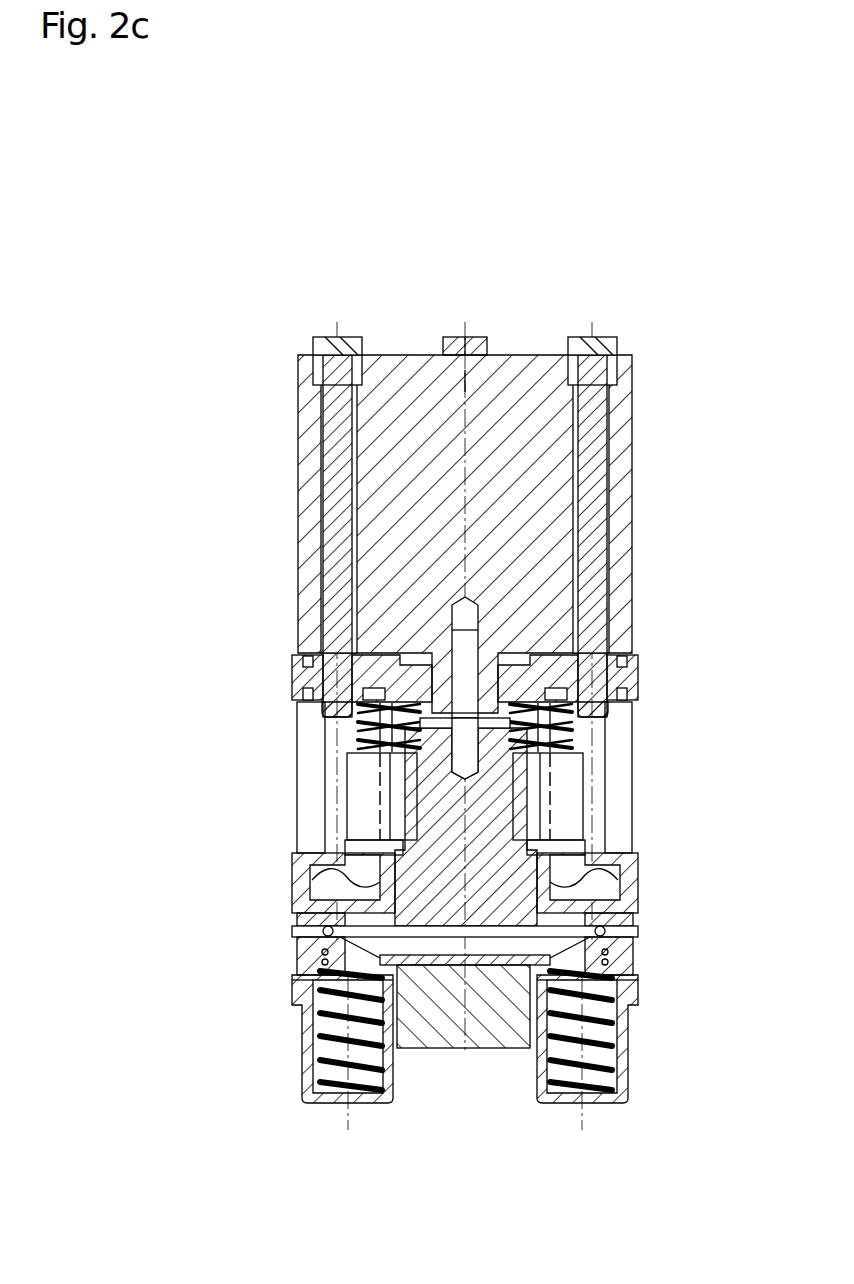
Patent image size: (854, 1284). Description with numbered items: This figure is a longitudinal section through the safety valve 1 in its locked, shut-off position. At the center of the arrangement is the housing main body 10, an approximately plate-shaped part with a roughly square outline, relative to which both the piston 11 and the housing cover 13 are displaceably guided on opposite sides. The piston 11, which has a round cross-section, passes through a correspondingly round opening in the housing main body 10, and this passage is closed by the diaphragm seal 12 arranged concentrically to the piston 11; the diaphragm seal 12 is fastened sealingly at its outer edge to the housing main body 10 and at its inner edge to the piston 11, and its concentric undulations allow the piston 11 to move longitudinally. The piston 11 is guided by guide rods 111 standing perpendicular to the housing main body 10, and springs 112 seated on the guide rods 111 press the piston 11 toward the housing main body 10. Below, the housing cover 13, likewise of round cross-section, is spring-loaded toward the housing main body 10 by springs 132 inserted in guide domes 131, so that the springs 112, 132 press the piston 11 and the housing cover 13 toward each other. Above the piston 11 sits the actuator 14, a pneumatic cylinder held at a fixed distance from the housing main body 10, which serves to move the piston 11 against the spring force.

The safety valve 1 is at (600, 249).
The housing main body 10 is at (280, 853).
The piston 11 is at (430, 830).
The diaphragm seal 12 is at (322, 928).
The housing cover 13 is at (486, 1018).
The actuator 14 is at (530, 478).
The guide rods 111 is at (565, 733).
The springs 112 is at (583, 713).
The guide domes 131 is at (617, 1025).
The springs 132 is at (620, 1083).